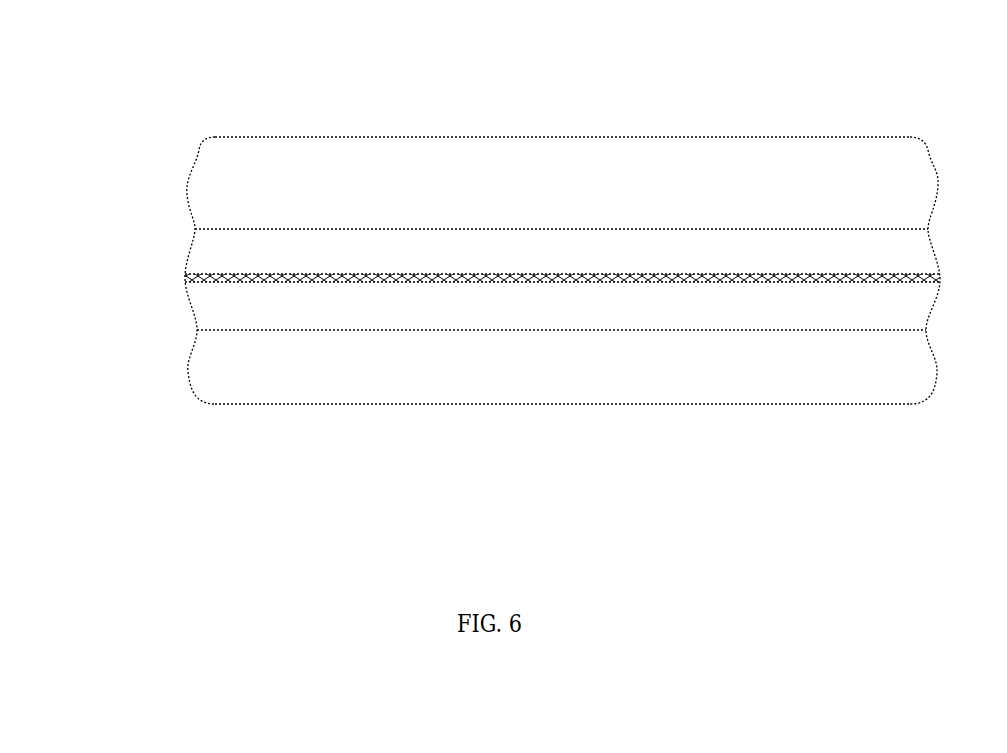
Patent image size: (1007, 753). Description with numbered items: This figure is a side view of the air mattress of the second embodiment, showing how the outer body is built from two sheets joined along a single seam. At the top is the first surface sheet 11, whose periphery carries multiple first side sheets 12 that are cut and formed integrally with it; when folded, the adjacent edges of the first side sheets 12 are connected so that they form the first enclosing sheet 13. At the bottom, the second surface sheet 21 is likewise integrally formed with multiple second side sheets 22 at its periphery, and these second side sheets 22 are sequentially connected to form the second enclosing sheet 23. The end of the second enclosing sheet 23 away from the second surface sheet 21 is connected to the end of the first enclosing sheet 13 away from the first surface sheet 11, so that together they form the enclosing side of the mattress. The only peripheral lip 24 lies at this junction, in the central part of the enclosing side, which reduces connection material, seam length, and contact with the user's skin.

The first surface sheet 11 is at (527, 137).
The first side sheets 12 is at (479, 126).
The first enclosing sheet 13 is at (561, 126).
The second surface sheet 21 is at (547, 405).
The second side sheets 22 is at (483, 422).
The second enclosing sheet 23 is at (561, 422).
The peripheral lip 24 is at (752, 278).